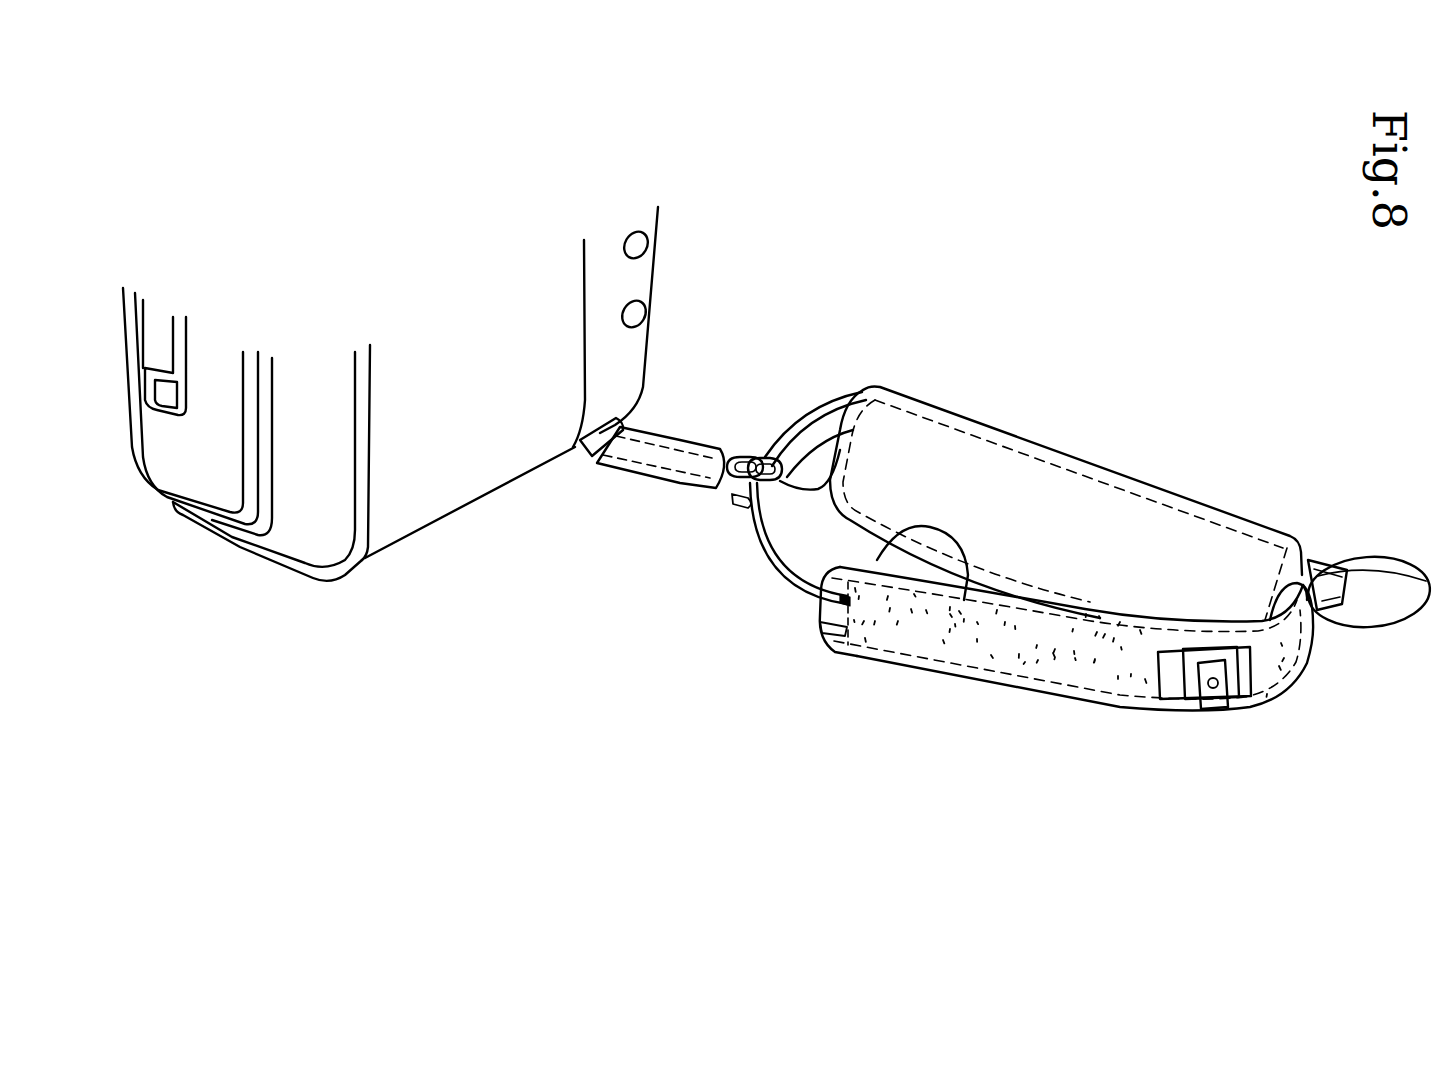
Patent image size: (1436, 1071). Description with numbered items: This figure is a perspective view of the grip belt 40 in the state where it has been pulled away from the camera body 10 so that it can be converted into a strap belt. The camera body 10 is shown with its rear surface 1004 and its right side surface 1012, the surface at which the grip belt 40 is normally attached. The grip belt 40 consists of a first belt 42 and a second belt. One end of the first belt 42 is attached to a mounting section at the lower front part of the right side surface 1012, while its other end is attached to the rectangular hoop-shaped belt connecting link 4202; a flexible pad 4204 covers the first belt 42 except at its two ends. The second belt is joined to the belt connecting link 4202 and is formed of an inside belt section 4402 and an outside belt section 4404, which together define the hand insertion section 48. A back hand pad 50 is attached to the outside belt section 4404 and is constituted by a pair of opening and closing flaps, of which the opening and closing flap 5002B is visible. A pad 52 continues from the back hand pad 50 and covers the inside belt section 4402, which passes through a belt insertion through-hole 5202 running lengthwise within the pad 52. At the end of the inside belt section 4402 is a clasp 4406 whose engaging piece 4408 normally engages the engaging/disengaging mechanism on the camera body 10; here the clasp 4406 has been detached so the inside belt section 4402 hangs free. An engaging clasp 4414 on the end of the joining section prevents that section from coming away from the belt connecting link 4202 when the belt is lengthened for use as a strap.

The camera body 10 is at (390, 428).
The rear surface 1004 is at (292, 513).
The right side surface 1012 is at (480, 482).
The grip belt 40 is at (1006, 522).
The first belt 42 is at (681, 460).
The belt connecting link 4202 is at (752, 458).
The pad 4204 is at (650, 482).
The inside belt section 4402 is at (801, 598).
The outside belt section 4404 is at (847, 397).
The clasp 4406 is at (1186, 733).
The engaging piece 4408 is at (1207, 709).
The engaging clasp 4414 is at (1385, 556).
The hand insertion section 48 is at (964, 600).
The back hand pad 50 is at (1066, 484).
The opening and closing flap 5002B is at (960, 473).
The pad 52 is at (1066, 668).
The belt insertion through-hole 5202 is at (848, 650).